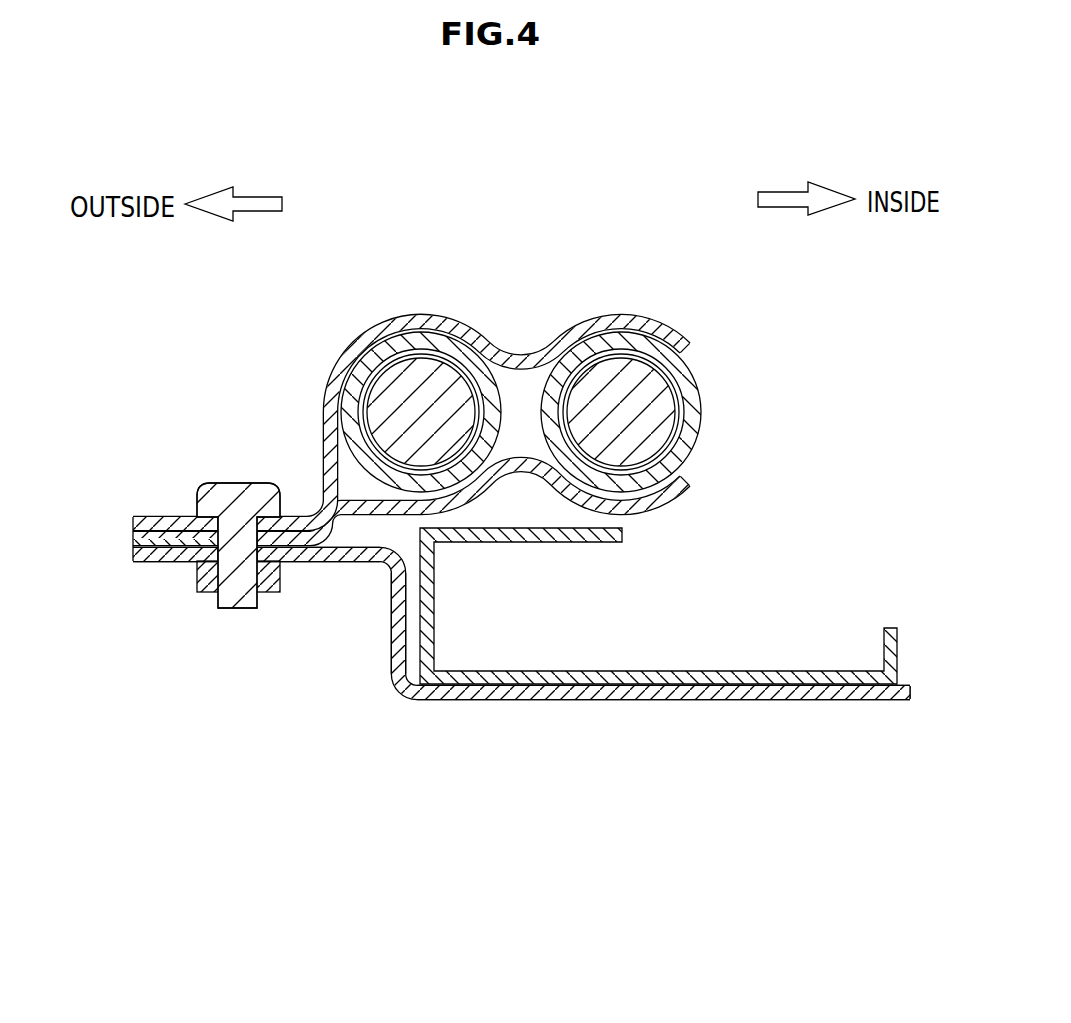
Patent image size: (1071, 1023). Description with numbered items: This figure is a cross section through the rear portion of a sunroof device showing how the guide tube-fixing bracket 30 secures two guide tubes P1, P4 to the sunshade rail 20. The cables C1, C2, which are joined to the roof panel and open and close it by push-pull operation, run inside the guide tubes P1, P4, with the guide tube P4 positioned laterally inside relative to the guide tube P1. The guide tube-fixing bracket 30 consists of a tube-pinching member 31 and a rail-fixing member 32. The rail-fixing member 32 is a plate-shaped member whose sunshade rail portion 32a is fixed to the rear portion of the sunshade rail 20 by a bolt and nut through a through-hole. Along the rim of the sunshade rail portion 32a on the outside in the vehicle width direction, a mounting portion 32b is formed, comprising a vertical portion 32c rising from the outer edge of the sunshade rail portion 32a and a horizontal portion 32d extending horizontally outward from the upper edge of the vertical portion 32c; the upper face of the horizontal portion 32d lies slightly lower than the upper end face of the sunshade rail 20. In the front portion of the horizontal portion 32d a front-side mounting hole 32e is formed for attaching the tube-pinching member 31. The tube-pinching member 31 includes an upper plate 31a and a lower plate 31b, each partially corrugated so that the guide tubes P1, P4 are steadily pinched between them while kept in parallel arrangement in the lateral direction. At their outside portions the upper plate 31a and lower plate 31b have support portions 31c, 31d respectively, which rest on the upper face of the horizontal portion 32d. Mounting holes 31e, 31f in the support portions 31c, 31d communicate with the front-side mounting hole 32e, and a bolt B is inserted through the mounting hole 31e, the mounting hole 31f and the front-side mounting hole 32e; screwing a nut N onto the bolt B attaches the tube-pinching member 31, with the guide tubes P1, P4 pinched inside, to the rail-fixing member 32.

The sunshade rail 20 is at (803, 670).
The guide tube-fixing bracket 30 is at (476, 561).
The tube-pinching member 31 is at (412, 406).
The upper plate 31a is at (687, 331).
The lower plate 31b is at (684, 500).
The support portion 31c is at (158, 519).
The support portion 31d is at (143, 540).
The mounting hole 31e is at (232, 515).
The mounting hole 31f is at (247, 525).
The rail-fixing member 32 is at (492, 685).
The sunshade rail portion 32a is at (770, 700).
The mounting portion 32b is at (157, 556).
The vertical portion 32c is at (395, 657).
The horizontal portion 32d is at (338, 562).
The front-side mounting hole 32e is at (230, 562).
The bolt B is at (241, 606).
The nut N is at (197, 582).
The cable C1 is at (416, 372).
The cable C2 is at (616, 372).
The guide tube P1 is at (367, 363).
The guide tube P4 is at (695, 414).